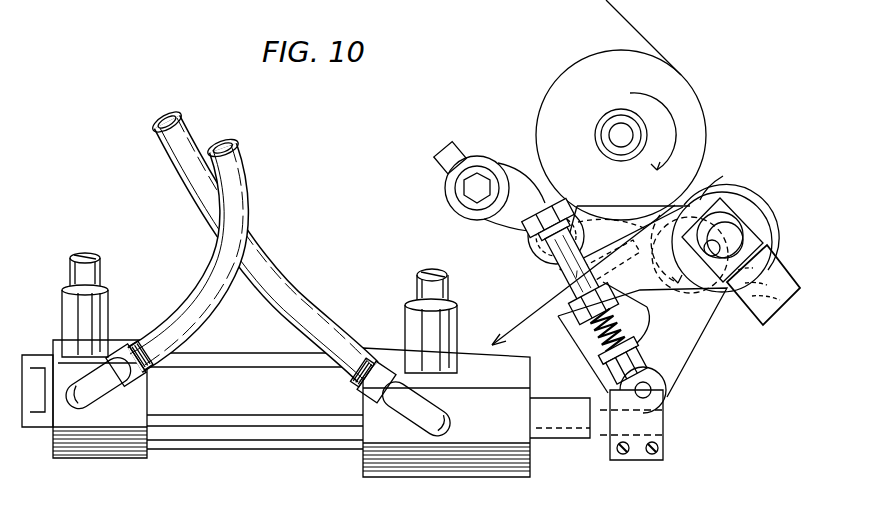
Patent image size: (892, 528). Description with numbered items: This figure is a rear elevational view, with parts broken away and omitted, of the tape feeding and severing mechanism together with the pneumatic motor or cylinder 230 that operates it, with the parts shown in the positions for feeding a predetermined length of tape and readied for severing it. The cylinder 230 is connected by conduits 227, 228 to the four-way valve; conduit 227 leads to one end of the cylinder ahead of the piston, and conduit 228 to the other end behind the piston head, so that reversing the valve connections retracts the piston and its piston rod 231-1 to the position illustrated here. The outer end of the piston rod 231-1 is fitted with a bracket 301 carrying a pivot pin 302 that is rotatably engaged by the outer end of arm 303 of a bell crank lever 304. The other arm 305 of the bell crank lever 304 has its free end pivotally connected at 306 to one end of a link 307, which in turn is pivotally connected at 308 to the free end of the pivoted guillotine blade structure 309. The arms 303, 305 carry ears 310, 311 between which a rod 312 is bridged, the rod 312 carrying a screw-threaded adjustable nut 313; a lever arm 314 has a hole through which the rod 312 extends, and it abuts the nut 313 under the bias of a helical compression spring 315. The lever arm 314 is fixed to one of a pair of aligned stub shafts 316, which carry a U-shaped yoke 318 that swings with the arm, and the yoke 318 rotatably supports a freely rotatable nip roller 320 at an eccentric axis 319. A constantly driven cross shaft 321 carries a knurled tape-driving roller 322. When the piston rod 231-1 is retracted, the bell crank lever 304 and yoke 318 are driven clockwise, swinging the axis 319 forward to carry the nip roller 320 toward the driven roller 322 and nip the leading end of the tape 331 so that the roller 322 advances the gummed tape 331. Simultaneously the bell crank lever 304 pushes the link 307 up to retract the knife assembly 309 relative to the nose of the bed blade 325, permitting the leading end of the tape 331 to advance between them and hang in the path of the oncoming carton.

The conduit 227 is at (249, 184).
The conduit 228 is at (276, 264).
The pneumatic motor or cylinder 230 is at (256, 450).
The piston rod 231-1 is at (561, 443).
The bracket 301 is at (657, 424).
The pivot pin 302 is at (655, 389).
The arm 303 is at (700, 328).
The bell crank lever 304 is at (717, 193).
The arm 305 is at (600, 213).
The pivotal connection 306 is at (540, 253).
The link 307 is at (503, 218).
The pivotal connection 308 is at (476, 190).
The guillotine blade structure 309 is at (449, 152).
The ear 310 is at (606, 369).
The ear 311 is at (521, 218).
The rod 312 is at (548, 291).
The screw-threaded adjustable nut 313 is at (585, 308).
The lever arm 314 is at (700, 208).
The helical compression spring 315 is at (601, 336).
The stub shafts 316 is at (727, 215).
The U-shaped yoke 318 is at (773, 272).
The eccentric axis 319 is at (722, 251).
The nip roller 320 is at (748, 232).
The cross shaft 321 is at (616, 121).
The knurled tape-driving roller 322 is at (552, 83).
The bed blade 325 is at (637, 313).
The tape 331 is at (655, 41).